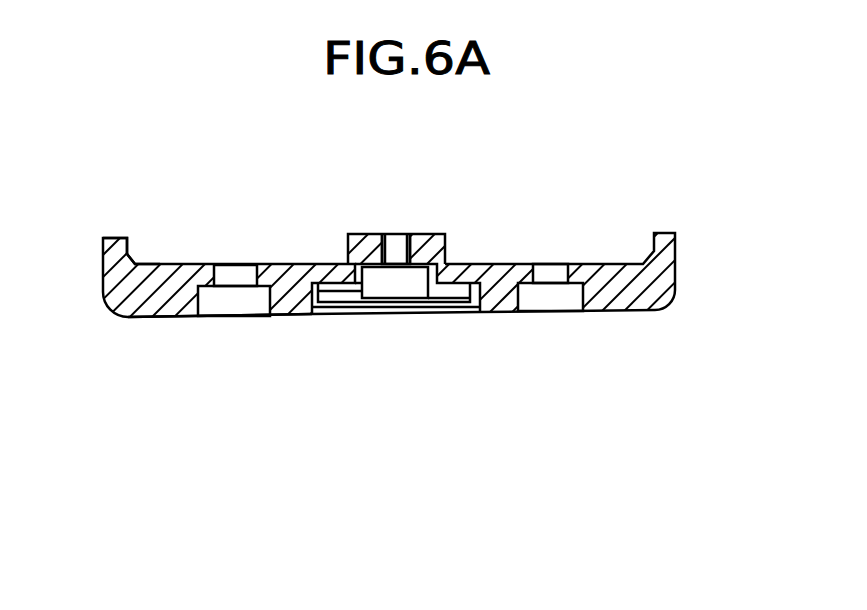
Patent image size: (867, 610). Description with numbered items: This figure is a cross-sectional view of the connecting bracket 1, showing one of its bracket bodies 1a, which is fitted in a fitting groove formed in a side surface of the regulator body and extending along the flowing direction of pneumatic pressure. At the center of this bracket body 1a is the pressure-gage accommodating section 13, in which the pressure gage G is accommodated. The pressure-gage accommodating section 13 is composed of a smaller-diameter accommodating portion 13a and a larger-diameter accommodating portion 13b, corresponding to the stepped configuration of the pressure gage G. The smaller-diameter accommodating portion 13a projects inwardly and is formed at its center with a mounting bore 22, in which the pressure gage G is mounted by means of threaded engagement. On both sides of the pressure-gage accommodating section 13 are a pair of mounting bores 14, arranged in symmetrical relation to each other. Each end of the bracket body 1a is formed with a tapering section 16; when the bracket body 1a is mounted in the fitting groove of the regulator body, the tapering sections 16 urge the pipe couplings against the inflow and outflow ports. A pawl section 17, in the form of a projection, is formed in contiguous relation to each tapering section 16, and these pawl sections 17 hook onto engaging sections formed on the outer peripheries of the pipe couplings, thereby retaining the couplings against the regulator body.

The connecting bracket 1 is at (598, 192).
The bracket body 1a is at (172, 307).
The pressure-gage accommodating section 13 is at (402, 357).
The smaller-diameter accommodating portion 13a is at (426, 276).
The larger-diameter accommodating portion 13b is at (470, 297).
The mounting bore 14 is at (200, 300).
The tapering section 16 is at (137, 262).
The pawl section 17 is at (112, 236).
The mounting bore 22 is at (403, 262).
The pressure gage G is at (372, 288).